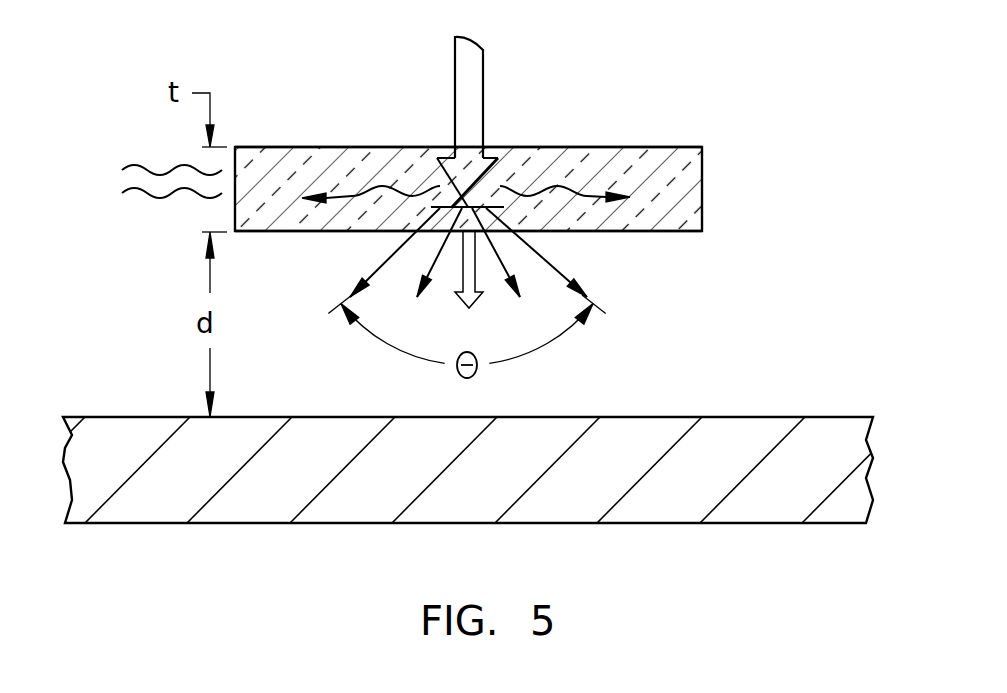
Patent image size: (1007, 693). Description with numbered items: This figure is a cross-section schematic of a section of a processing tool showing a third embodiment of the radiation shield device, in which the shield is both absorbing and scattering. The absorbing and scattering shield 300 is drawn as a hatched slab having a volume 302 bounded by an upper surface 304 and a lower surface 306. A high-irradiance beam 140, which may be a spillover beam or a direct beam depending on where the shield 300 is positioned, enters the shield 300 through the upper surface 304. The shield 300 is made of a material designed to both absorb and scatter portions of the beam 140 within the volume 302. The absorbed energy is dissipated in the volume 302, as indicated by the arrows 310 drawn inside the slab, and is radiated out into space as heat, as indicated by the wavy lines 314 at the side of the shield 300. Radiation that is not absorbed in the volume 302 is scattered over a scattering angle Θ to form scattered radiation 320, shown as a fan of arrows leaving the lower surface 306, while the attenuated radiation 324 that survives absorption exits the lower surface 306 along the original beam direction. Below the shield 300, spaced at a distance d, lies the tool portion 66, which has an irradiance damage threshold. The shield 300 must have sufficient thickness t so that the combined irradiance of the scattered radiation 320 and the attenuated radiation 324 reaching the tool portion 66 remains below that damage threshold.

The absorbing and scattering shield 300 is at (534, 97).
The volume 302 is at (687, 186).
The upper surface 304 is at (672, 147).
The lower surface 306 is at (687, 231).
The high-irradiance beam 140 is at (455, 58).
The arrows 310 is at (365, 186).
The wavy lines 314 is at (142, 166).
The scattered radiation 320 is at (388, 260).
The attenuated radiation 324 is at (472, 306).
The tool portion 66 is at (817, 417).